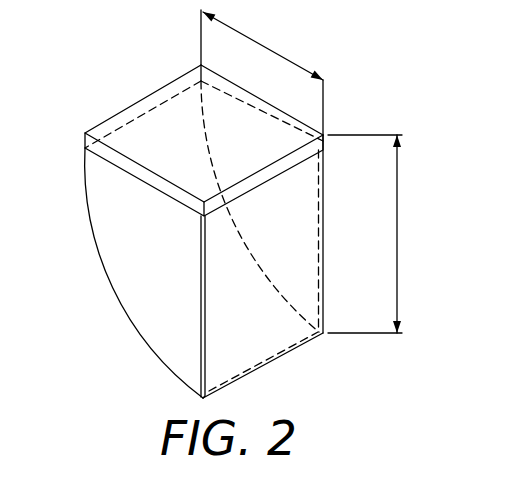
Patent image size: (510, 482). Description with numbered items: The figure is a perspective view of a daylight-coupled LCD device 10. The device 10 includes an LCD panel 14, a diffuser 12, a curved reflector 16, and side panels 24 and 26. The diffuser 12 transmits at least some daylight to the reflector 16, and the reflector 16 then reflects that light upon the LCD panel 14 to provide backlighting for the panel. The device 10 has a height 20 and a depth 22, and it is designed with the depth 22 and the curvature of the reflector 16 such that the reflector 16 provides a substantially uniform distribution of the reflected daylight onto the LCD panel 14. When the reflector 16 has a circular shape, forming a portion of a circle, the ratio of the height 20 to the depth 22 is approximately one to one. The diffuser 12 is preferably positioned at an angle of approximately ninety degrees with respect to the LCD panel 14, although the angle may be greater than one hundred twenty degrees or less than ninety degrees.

The daylight-coupled LCD device 10 is at (340, 43).
The diffuser 12 is at (85, 135).
The LCD panel 14 is at (200, 313).
The curved reflector 16 is at (118, 302).
The height 20 is at (398, 205).
The depth 22 is at (270, 56).
The side panel 24 is at (170, 355).
The side panel 26 is at (303, 252).